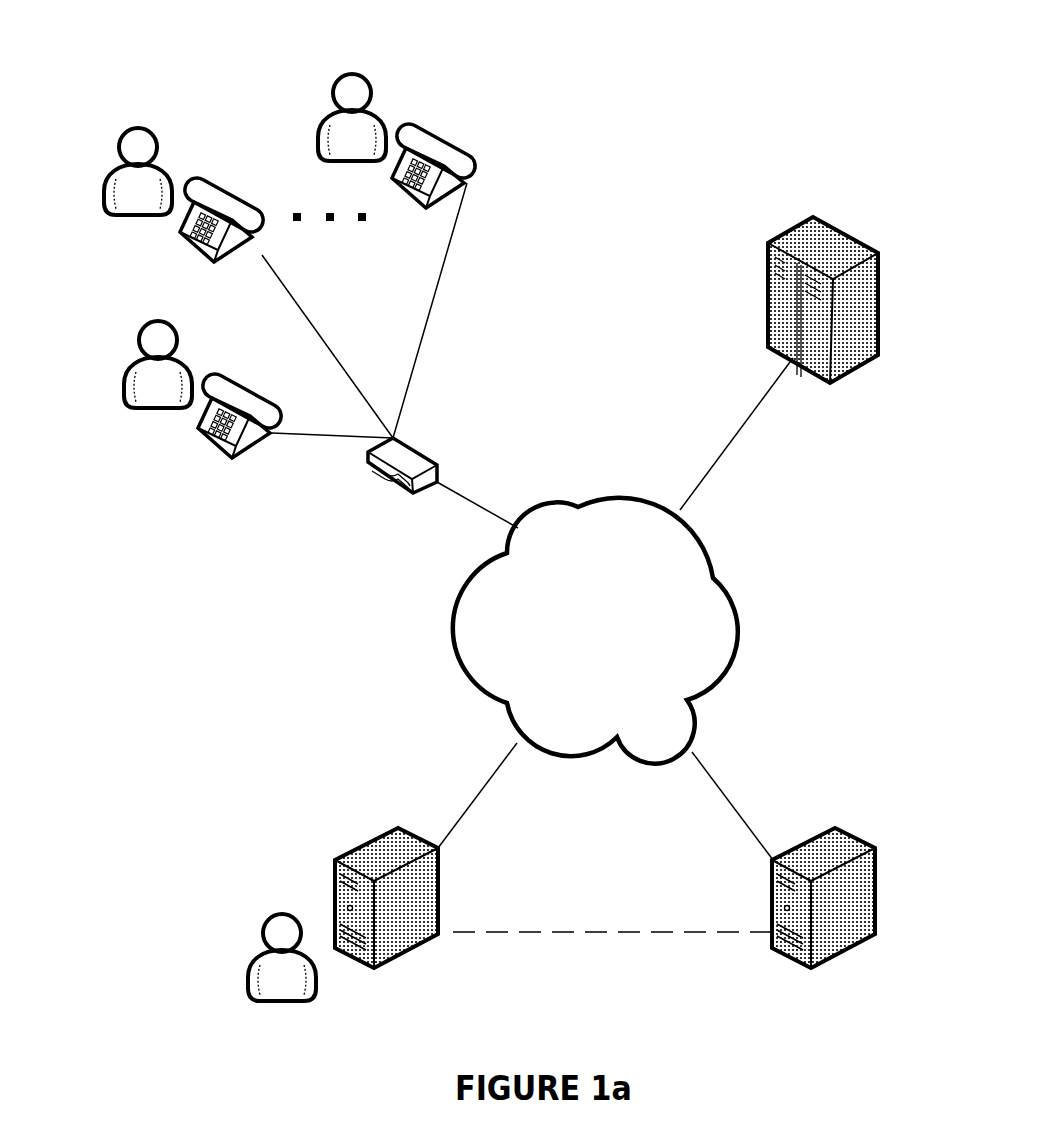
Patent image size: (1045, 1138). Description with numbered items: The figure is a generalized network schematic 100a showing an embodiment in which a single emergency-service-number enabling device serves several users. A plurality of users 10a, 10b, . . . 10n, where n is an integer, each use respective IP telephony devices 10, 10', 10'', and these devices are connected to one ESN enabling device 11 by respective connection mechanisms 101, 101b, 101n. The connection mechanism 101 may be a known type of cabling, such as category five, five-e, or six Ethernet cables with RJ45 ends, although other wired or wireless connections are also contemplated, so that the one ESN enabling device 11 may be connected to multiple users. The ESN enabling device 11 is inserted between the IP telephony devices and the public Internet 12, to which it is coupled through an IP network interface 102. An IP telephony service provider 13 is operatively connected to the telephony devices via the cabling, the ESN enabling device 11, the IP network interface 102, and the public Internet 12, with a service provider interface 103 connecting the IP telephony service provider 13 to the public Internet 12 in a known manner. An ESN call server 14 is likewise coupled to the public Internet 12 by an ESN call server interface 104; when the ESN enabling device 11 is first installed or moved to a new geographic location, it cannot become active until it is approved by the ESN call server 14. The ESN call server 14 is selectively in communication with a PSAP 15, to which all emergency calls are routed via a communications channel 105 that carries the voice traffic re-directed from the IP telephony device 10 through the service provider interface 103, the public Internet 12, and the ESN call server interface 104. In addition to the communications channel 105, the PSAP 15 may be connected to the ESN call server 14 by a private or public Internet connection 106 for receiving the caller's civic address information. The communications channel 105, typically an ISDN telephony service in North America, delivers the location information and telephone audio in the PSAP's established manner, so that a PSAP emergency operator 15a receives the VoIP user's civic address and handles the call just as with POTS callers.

The generalized network schematic 100a is at (634, 140).
The IP telephony device 10 is at (241, 382).
The IP telephony device 10' is at (223, 186).
The IP telephony device 10'' is at (435, 132).
The end-user 10a is at (140, 322).
The user 10b is at (122, 130).
The user 10n is at (336, 76).
The ESN enabling device 11 is at (365, 470).
The public Internet 12 is at (628, 492).
The IP telephony service provider 13 is at (814, 214).
The ESN call server 14 is at (858, 835).
The PSAP 15 is at (400, 826).
The PSAP emergency operator 15a is at (266, 912).
The connection mechanism 101 is at (323, 438).
The connection mechanism 101b is at (338, 358).
The connection mechanism 101n is at (440, 282).
The IP network interface 102 is at (477, 500).
The service provider interface 103 is at (735, 430).
The ESN call server interface 104 is at (727, 795).
The communications channel 105 is at (604, 928).
The Internet connection 106 is at (482, 792).